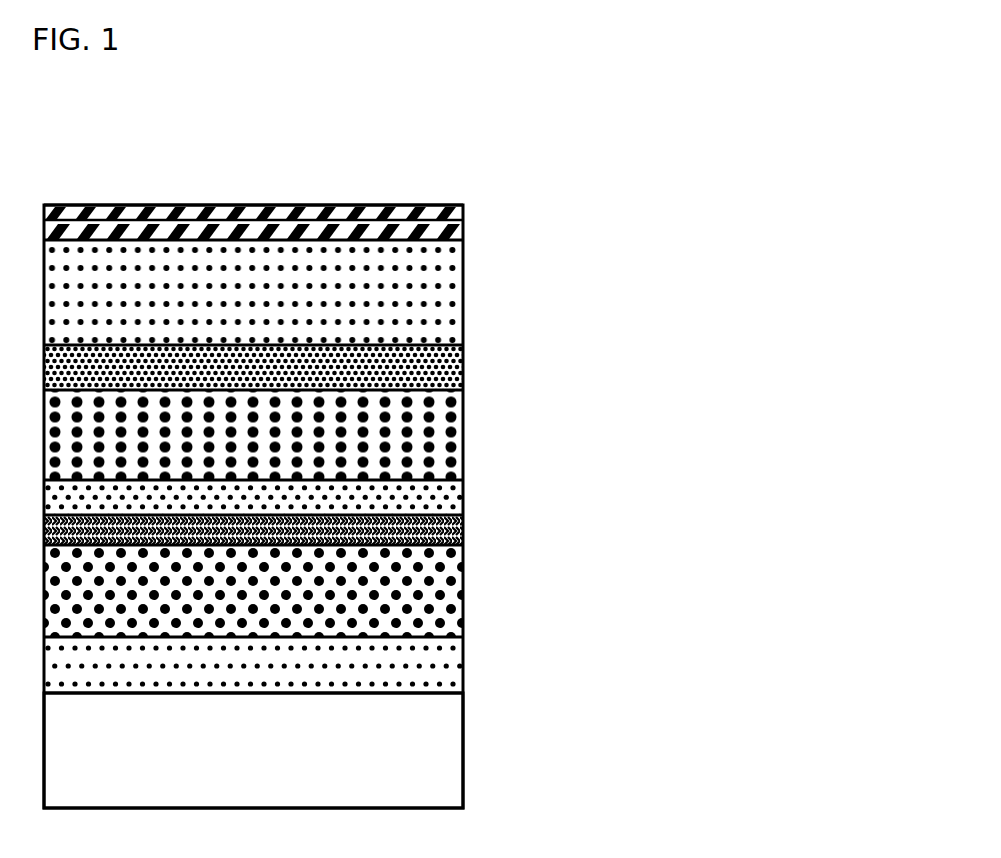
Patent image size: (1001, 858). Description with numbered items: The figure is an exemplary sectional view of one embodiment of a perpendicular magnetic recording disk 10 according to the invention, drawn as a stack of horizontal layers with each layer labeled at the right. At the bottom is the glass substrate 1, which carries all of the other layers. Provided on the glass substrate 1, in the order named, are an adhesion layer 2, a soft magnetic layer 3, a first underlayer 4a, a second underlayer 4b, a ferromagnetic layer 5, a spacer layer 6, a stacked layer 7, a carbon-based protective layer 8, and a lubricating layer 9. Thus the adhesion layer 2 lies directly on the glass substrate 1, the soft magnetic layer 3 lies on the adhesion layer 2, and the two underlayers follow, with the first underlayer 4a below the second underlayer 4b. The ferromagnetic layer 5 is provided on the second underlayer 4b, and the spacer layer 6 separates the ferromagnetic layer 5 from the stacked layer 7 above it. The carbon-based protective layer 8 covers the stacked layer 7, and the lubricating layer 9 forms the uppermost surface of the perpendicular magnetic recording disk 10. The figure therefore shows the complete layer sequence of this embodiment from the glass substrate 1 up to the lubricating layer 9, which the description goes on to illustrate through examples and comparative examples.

The perpendicular magnetic recording disk 10 is at (272, 120).
The lubricating layer 9 is at (420, 205).
The carbon-based protective layer 8 is at (463, 230).
The stacked layer 7 is at (463, 293).
The spacer layer 6 is at (463, 367).
The ferromagnetic layer 5 is at (463, 437).
The second underlayer 4b is at (463, 497).
The first underlayer 4a is at (463, 535).
The soft magnetic layer 3 is at (463, 593).
The adhesion layer 2 is at (463, 670).
The glass substrate 1 is at (463, 752).